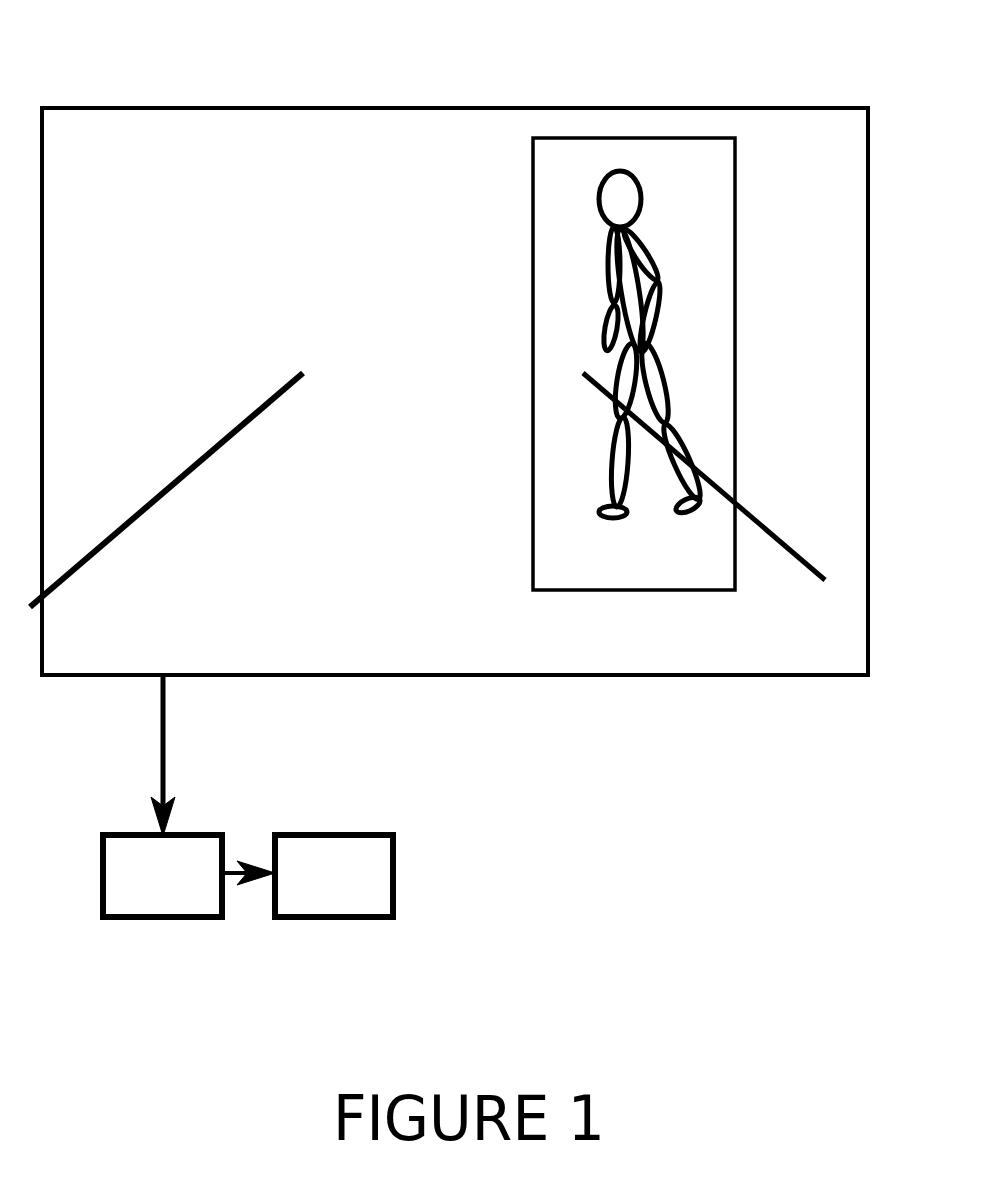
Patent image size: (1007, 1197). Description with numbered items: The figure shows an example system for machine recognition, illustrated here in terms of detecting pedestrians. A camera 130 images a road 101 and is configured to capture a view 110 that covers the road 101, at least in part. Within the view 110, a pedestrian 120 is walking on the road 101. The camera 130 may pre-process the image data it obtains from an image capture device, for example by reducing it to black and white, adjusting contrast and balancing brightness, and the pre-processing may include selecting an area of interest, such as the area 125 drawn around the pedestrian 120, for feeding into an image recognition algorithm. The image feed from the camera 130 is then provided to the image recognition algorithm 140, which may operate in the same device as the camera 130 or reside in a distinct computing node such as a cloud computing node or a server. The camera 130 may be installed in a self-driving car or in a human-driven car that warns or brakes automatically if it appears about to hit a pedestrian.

The road 101 is at (182, 470).
The view 110 is at (423, 676).
The pedestrian 120 is at (653, 263).
The area of interest 125 is at (666, 138).
The camera 130 is at (162, 876).
The image recognition algorithm 140 is at (334, 876).